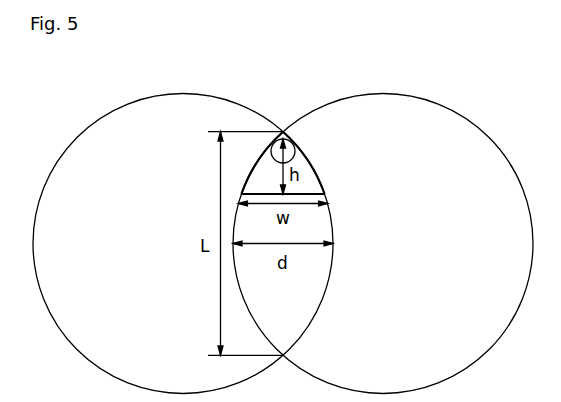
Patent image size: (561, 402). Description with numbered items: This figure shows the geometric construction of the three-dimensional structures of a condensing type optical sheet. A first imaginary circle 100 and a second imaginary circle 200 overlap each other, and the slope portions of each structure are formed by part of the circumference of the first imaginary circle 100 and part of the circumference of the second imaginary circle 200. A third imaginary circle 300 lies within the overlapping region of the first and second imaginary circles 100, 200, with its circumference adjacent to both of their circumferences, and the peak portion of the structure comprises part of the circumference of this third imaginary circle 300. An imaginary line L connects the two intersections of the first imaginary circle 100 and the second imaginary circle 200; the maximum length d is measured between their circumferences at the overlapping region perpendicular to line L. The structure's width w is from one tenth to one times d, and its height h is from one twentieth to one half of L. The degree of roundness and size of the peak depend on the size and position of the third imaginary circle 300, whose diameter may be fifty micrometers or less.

The first imaginary circle 100 is at (183, 93).
The second imaginary circle 200 is at (383, 93).
The third imaginary circle 300 is at (297, 157).